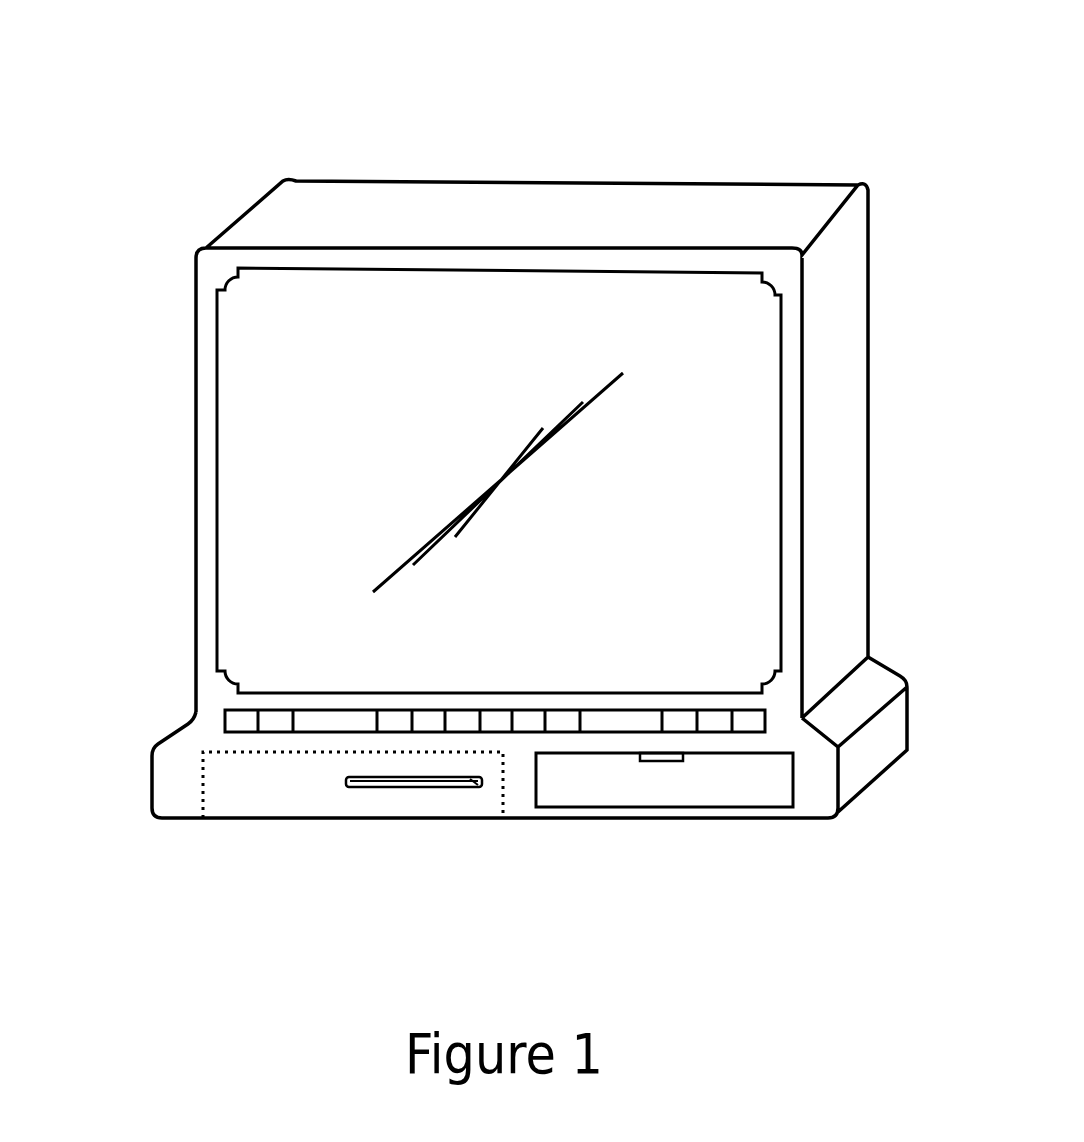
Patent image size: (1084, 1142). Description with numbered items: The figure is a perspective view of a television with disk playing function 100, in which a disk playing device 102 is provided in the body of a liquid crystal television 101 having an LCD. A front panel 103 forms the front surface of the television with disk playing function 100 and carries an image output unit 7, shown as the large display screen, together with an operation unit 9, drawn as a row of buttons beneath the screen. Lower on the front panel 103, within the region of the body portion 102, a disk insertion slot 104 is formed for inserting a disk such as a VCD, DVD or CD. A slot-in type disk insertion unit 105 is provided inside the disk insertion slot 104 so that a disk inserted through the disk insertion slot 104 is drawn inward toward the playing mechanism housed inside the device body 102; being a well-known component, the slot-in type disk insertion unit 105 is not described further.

The television with disk playing function 100 is at (746, 94).
The liquid crystal television 101 is at (543, 210).
The image output unit 7 is at (742, 457).
The operation unit 9 is at (227, 720).
The front panel 103 is at (182, 777).
The disk playing device 102 is at (289, 828).
The disk insertion slot 104 is at (391, 793).
The slot-in type disk insertion unit 105 is at (465, 787).